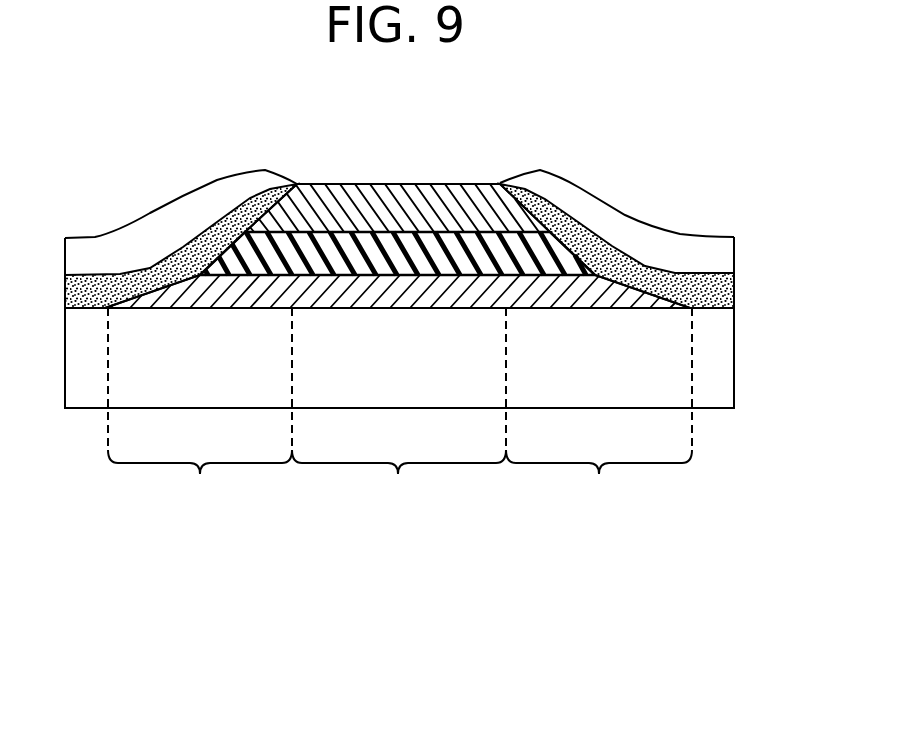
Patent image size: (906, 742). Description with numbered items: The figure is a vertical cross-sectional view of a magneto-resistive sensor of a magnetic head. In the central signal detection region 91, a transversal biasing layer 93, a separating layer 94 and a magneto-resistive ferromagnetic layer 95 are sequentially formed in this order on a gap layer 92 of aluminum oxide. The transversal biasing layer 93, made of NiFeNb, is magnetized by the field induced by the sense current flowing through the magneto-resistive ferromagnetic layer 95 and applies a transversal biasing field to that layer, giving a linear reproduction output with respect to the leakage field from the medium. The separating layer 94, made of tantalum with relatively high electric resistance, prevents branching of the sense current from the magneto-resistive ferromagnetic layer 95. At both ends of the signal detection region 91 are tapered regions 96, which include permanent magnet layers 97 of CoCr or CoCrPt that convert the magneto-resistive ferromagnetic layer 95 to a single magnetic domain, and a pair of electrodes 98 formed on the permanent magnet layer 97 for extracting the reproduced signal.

The signal detection region 91 is at (399, 413).
The gap layer 92 is at (713, 355).
The transversal biasing layer 93 is at (448, 290).
The separating layer 94 is at (360, 245).
The magneto-resistive ferromagnetic layer 95 is at (303, 193).
The tapered regions 96 is at (400, 414).
The permanent magnet layer 97 is at (153, 278).
The electrodes 98 is at (195, 205).